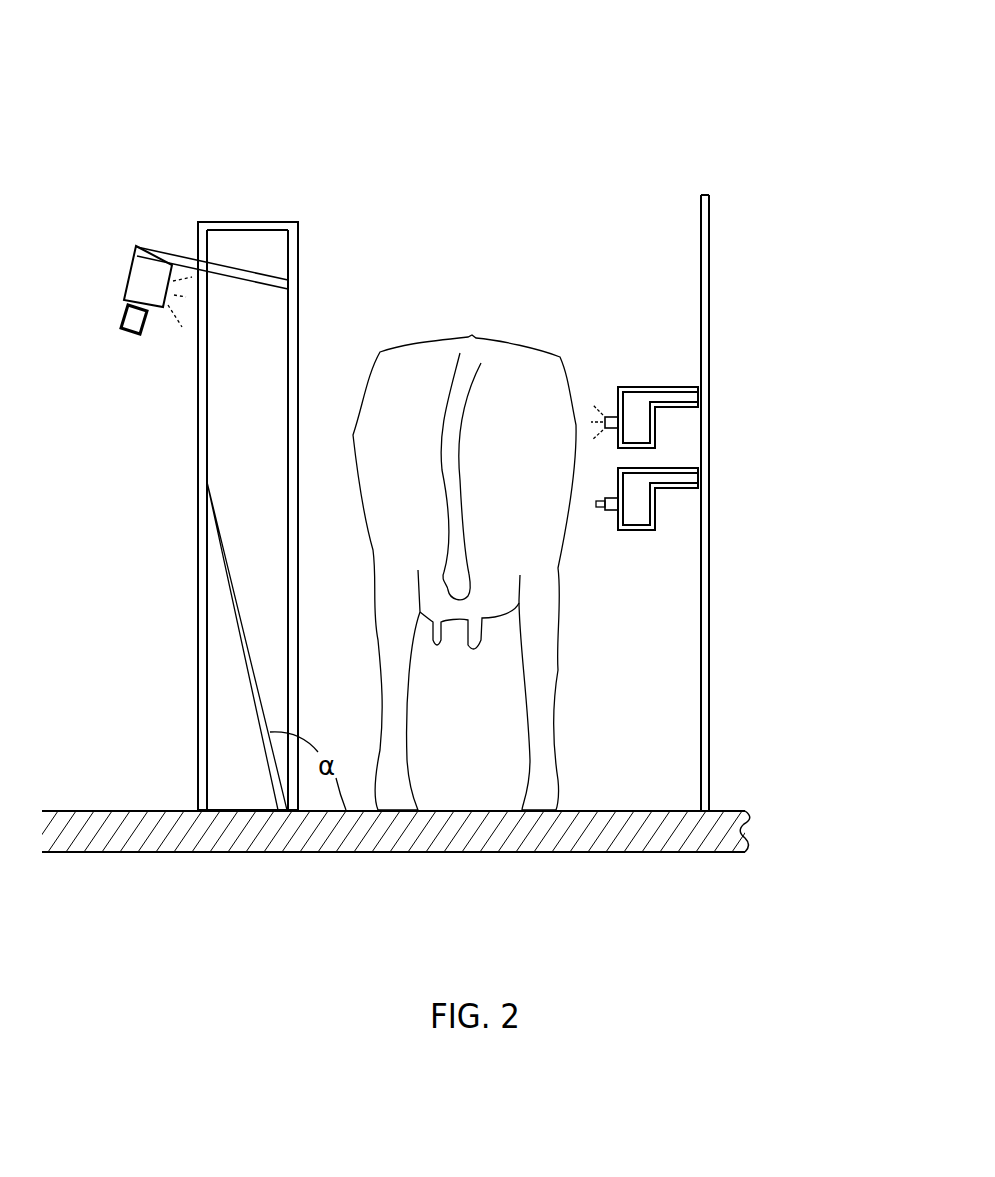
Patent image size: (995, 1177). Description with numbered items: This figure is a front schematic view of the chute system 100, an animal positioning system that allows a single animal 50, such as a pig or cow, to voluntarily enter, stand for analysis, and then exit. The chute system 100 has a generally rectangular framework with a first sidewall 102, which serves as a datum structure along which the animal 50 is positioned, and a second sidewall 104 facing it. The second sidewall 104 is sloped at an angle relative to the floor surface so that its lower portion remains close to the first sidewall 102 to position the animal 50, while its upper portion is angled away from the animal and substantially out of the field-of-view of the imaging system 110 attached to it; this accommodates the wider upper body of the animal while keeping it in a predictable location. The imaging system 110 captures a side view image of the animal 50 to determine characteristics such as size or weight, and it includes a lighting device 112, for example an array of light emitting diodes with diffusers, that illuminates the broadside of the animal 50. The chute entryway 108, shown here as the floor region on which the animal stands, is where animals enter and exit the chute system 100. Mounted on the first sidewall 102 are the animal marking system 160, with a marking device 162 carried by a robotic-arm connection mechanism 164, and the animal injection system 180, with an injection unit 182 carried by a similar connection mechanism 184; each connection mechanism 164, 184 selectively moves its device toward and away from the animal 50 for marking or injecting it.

The chute system 100 is at (174, 112).
The animal 50 is at (422, 355).
The first sidewall 102 is at (711, 256).
The second sidewall 104 is at (225, 552).
The chute entryway 108 is at (593, 750).
The imaging system 110 is at (130, 276).
The lighting device 112 is at (131, 336).
The animal marking system 160 is at (722, 373).
The marking device 162 is at (636, 425).
The connection mechanism 164 is at (670, 387).
The animal injection system 180 is at (730, 519).
The injection unit 182 is at (638, 512).
The connection mechanism 184 is at (670, 467).